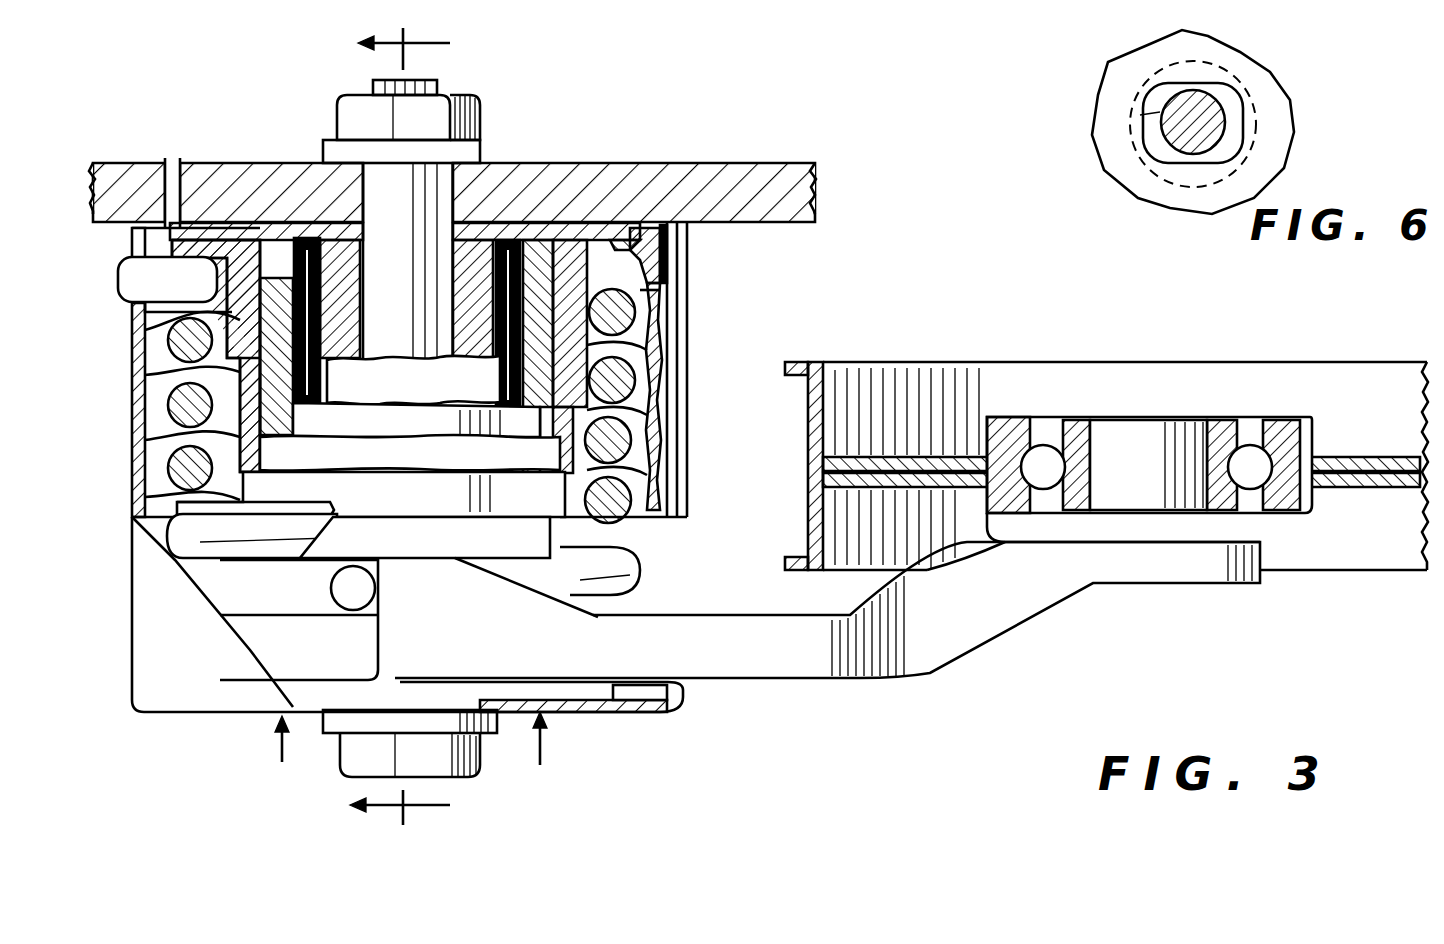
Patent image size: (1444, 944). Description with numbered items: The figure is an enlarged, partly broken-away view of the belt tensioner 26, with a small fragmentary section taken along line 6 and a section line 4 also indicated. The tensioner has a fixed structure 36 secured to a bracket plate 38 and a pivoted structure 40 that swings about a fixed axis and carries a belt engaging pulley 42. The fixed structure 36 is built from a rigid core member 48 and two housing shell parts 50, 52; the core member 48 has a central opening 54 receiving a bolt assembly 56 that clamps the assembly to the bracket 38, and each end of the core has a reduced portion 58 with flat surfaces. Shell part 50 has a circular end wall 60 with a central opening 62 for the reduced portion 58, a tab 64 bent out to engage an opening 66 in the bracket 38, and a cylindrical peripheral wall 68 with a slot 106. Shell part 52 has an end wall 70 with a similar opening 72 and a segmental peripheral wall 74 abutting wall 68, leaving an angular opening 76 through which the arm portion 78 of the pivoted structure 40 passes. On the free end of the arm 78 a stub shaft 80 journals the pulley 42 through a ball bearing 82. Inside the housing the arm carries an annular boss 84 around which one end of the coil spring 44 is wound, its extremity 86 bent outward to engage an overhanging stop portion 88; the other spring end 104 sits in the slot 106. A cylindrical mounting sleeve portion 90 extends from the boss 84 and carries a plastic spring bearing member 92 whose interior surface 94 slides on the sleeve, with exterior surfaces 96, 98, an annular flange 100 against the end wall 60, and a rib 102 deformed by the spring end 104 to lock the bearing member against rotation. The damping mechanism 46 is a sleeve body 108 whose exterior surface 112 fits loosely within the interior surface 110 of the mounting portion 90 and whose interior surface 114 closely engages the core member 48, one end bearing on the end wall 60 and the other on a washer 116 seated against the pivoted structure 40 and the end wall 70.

In FIG. 3, the section line 4- 4 is at (416, 428).
In FIG. 3, the section line 6- 6 is at (415, 752).
In FIG. 3, the belt tensioner 26 is at (686, 705).
In FIG. 3, the fixed structure 36 is at (700, 278).
In FIG. 3, the bracket plate 38 is at (810, 168).
In FIG. 3, the pivoted structure 40 is at (812, 688).
In FIG. 3, the belt engaging pulley 42 is at (815, 365).
In FIG. 3, the coil spring 44 is at (635, 525).
In FIG. 3, the damping mechanism 46 is at (528, 238).
In FIG. 3, the core member 48 is at (283, 225).
In FIG. 6, the core member 48 is at (1140, 55).
In FIG. 3, the housing shell part 50 is at (652, 392).
In FIG. 3, the housing shell part 52 is at (158, 710).
In FIG. 6, the housing shell part 52 is at (1275, 105).
In FIG. 3, the central opening 54 is at (365, 360).
In FIG. 3, the bolt assembly 56 is at (355, 95).
In FIG. 6, the bolt assembly 56 is at (1170, 150).
In FIG. 3, the reduced portion 58 is at (368, 226).
In FIG. 6, the reduced portion 58 is at (1240, 150).
In FIG. 3, the circular end wall 60 is at (585, 232).
In FIG. 3, the central opening 62 is at (505, 212).
In FIG. 3, the tab 64 is at (150, 165).
In FIG. 3, the opening 66 is at (178, 160).
In FIG. 3, the cylindrical peripheral wall 68 is at (683, 345).
In FIG. 3, the circular end wall 70 is at (590, 705).
In FIG. 6, the circular end wall 70 is at (1092, 106).
In FIG. 3, the central opening 72 is at (480, 690).
In FIG. 6, the central opening 72 is at (1240, 133).
In FIG. 3, the segmental peripheral wall 74 is at (145, 628).
In FIG. 3, the angular opening 76 is at (690, 690).
In FIG. 3, the arm portion 78 is at (725, 612).
In FIG. 3, the stub shaft 80 is at (1140, 420).
In FIG. 3, the ball bearing 82 is at (1018, 417).
In FIG. 3, the annular boss 84 is at (225, 598).
In FIG. 3, the radially outwardly bent extremity 86 is at (355, 600).
In FIG. 3, the overhanging stop portion 88 is at (440, 580).
In FIG. 3, the cylindrical mounting sleeve portion 90 is at (257, 417).
In FIG. 3, the spring bearing member 92 is at (247, 438).
In FIG. 3, the cylindrical interior peripheral surface 94 is at (247, 377).
In FIG. 3, the exterior peripheral surface 96 is at (247, 495).
In FIG. 3, the exterior peripheral surface 98 is at (230, 318).
In FIG. 3, the annular flange 100 is at (640, 228).
In FIG. 3, the rib 102 is at (683, 262).
In FIG. 3, the outwardly bent end 104 is at (127, 273).
In FIG. 3, the slot 106 is at (130, 313).
In FIG. 3, the sleeve body 108 is at (460, 400).
In FIG. 3, the cylindrical interior peripheral surface 110 is at (577, 410).
In FIG. 3, the exterior peripheral surface 112 is at (668, 298).
In FIG. 3, the interior peripheral surface 114 is at (490, 312).
In FIG. 3, the washer 116 is at (590, 688).